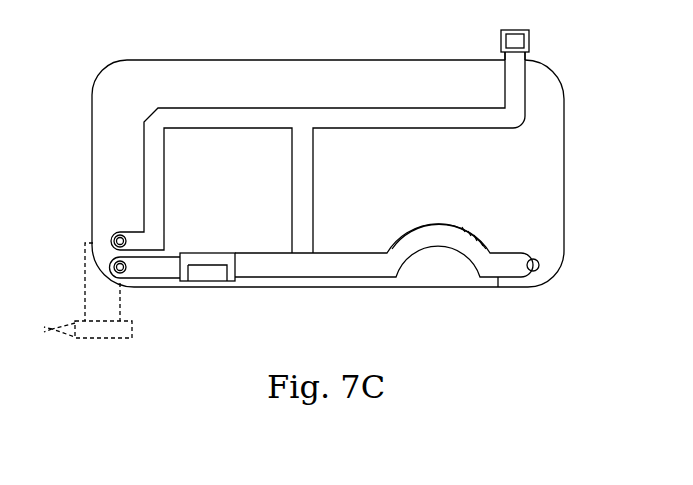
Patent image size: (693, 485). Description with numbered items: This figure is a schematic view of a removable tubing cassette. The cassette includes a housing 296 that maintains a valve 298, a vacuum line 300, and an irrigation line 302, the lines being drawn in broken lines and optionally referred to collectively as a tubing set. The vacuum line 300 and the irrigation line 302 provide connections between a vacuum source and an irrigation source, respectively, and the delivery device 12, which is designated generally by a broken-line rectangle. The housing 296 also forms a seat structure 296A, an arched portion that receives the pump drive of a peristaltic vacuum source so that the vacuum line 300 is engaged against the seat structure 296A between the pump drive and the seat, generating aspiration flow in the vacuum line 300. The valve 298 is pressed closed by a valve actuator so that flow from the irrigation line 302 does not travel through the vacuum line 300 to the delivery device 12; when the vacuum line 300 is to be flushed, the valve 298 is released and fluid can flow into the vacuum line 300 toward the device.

The delivery device 12 is at (148, 336).
The housing 296 is at (565, 193).
The seat structure 296A is at (455, 222).
The valve 298 is at (203, 276).
The vacuum line 300 is at (263, 267).
The irrigation line 302 is at (143, 190).